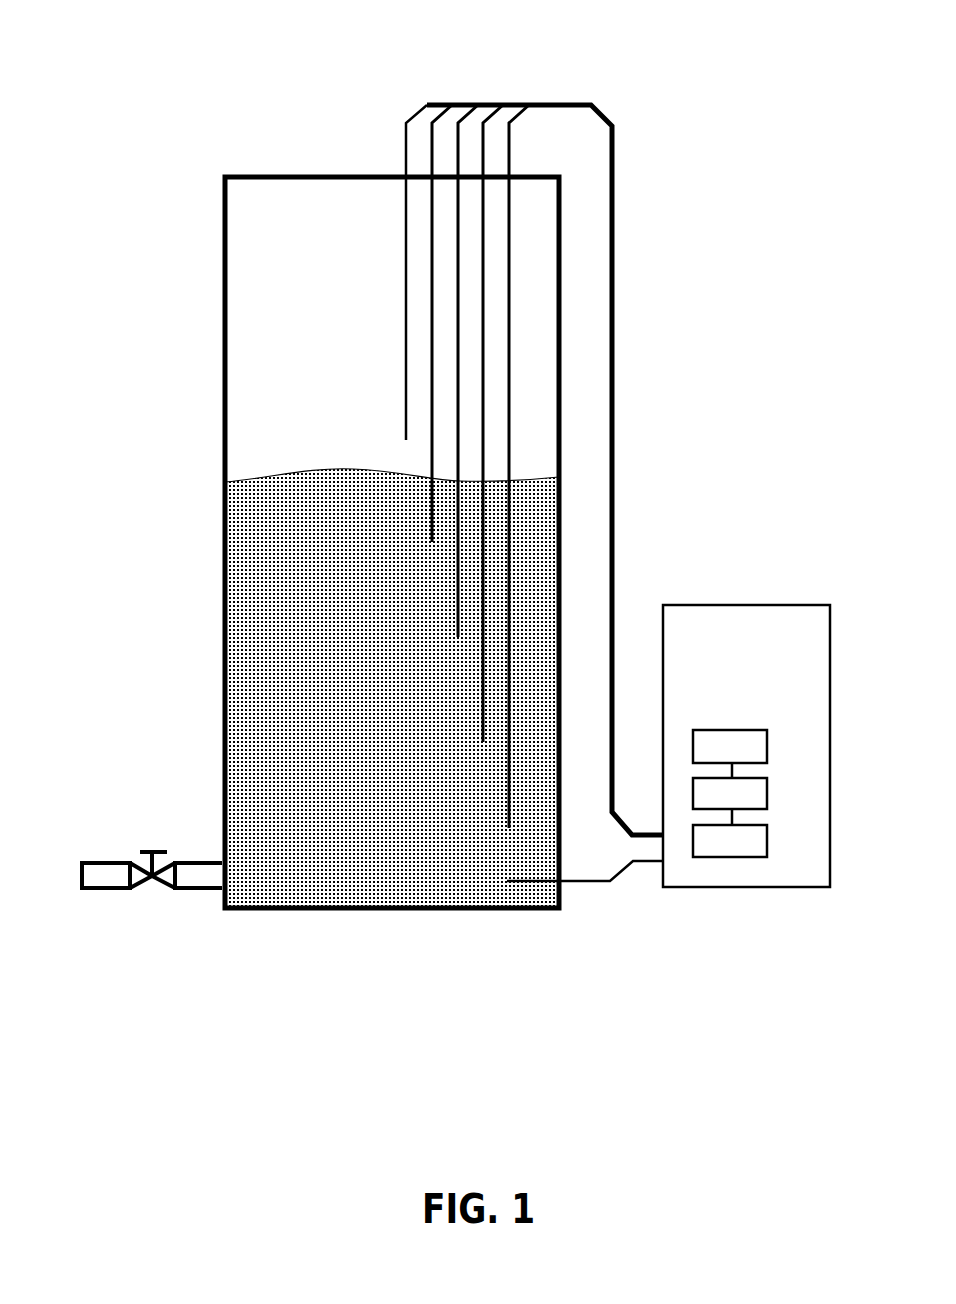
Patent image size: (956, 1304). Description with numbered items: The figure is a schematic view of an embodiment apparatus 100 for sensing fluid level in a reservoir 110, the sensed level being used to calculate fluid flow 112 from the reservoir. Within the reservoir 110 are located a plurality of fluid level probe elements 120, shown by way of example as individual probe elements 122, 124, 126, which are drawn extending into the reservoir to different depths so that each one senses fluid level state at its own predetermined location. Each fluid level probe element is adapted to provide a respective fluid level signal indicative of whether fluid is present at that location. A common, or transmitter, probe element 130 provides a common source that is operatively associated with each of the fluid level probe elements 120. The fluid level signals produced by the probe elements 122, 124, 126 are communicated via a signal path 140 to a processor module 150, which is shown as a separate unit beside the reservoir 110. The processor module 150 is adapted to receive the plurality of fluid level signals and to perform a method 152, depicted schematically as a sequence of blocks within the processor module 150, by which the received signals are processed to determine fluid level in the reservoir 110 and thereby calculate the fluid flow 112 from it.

The apparatus 100 is at (262, 67).
The reservoir 110 is at (222, 283).
The fluid flow 112 is at (106, 822).
The fluid level probe elements 120 is at (374, 425).
The fluid level probe element 122 is at (420, 548).
The fluid level probe element 124 is at (450, 642).
The fluid level probe element 126 is at (477, 748).
The common probe element 130 is at (507, 888).
The signal path 140 is at (613, 403).
The processor module 150 is at (707, 605).
The method 152 is at (722, 700).